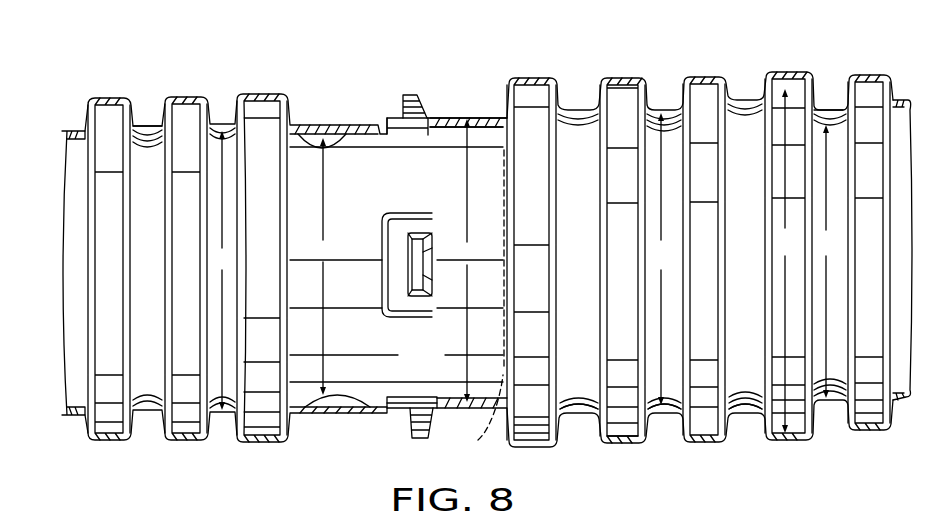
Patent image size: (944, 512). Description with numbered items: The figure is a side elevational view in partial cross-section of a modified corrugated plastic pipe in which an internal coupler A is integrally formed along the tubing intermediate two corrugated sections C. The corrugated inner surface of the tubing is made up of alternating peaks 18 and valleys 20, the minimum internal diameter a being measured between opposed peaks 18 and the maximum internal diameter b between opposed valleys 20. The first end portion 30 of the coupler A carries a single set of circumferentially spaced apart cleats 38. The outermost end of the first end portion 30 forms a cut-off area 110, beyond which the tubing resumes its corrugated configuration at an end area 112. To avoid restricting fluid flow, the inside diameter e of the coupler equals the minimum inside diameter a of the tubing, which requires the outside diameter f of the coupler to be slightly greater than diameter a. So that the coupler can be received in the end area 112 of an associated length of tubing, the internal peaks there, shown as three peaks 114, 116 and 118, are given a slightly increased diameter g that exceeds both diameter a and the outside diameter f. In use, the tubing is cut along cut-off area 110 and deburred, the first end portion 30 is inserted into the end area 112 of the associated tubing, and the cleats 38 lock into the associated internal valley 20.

The valleys 20 is at (115, 105).
The peaks 18 is at (147, 130).
The first end portion 30 is at (373, 145).
The cleats 38 is at (412, 93).
The internal coupler A is at (452, 115).
The corrugated sections C is at (146, 108).
The minimum internal diameter a is at (230, 246).
The maximum internal diameter b is at (792, 233).
The inside diameter of the coupler e is at (337, 259).
The outside diameter of the coupler f is at (476, 261).
The increased internal diameter g is at (671, 266).
The cut-off area 110 is at (475, 417).
The end area 112 is at (641, 446).
The internal peak 114 is at (585, 415).
The internal peak 116 is at (675, 410).
The internal peak 118 is at (768, 405).